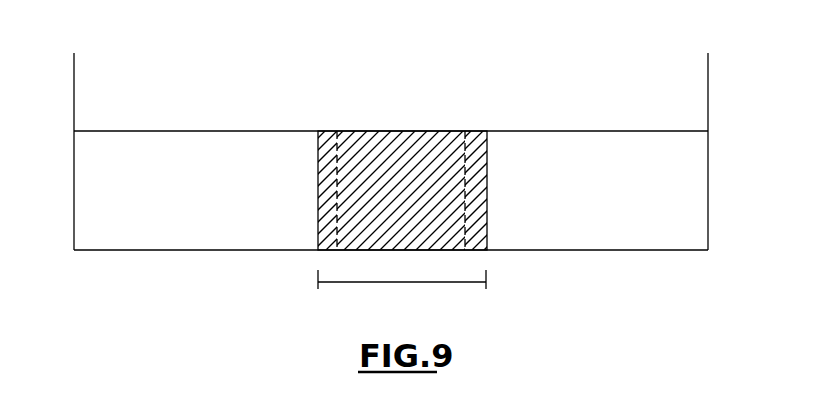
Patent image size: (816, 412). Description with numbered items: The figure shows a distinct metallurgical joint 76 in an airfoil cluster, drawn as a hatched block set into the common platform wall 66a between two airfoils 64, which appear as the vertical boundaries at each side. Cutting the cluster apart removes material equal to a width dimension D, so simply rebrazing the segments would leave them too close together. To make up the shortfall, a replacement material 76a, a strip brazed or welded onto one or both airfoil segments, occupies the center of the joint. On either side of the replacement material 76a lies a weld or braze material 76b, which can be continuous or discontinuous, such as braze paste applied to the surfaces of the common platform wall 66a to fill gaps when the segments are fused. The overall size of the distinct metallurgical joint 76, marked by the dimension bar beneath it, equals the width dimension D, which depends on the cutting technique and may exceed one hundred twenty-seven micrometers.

The airfoils 64 is at (74, 78).
The common platform wall 66a is at (180, 131).
The distinct metallurgical joint 76 is at (404, 149).
The replacement material 76a is at (390, 148).
The weld or braze material 76b is at (331, 201).
The width dimension D is at (386, 282).